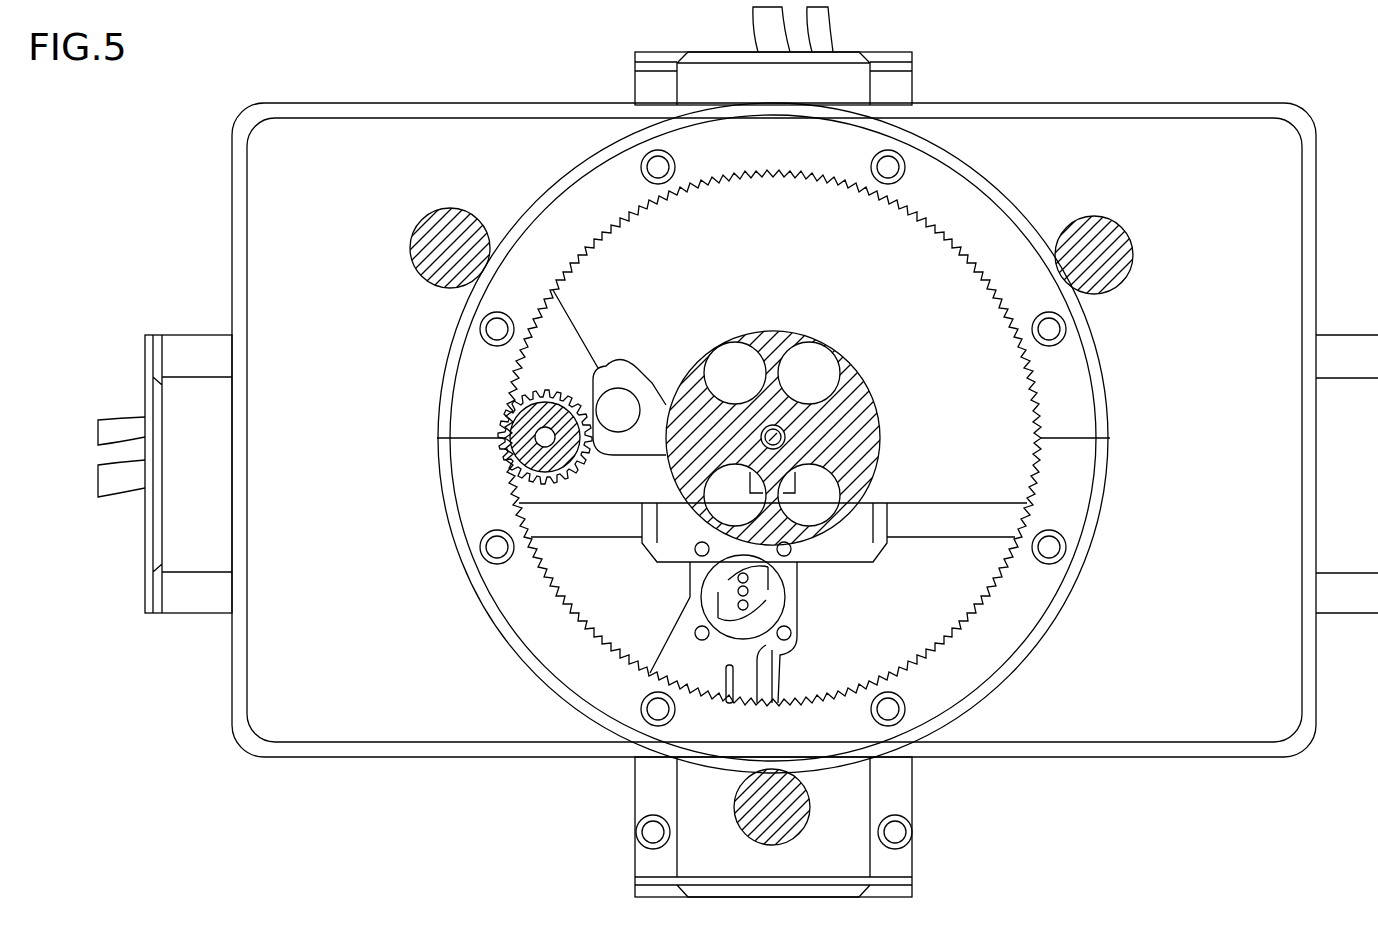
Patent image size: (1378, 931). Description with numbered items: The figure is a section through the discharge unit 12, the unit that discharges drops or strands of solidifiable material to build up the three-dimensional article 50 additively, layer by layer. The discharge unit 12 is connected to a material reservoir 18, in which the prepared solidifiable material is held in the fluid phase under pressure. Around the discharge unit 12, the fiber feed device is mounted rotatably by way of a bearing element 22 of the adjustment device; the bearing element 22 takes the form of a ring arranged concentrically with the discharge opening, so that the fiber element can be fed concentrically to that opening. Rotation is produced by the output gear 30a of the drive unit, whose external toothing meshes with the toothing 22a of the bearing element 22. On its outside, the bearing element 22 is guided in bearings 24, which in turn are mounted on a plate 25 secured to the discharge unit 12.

The discharge unit 12 is at (857, 438).
The material reservoir 18 is at (773, 425).
The bearing element 22 is at (958, 203).
The toothing 22a is at (895, 207).
The bearings 24 is at (440, 240).
The plate 25 is at (1195, 597).
The output gear 30a is at (552, 383).
The three-dimensional article 50 is at (642, 383).